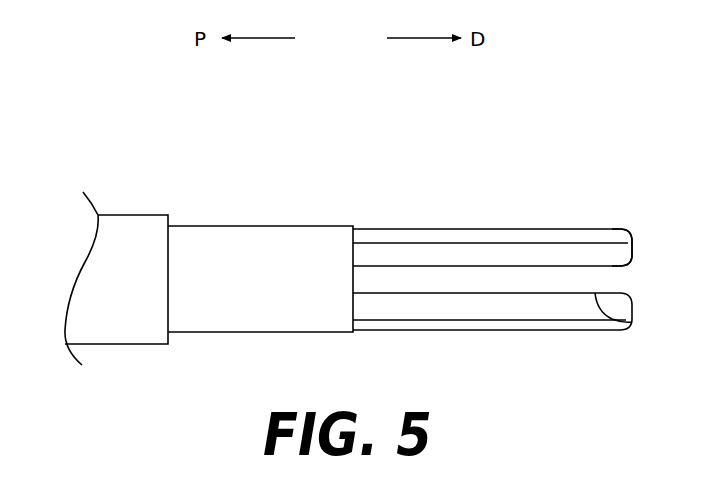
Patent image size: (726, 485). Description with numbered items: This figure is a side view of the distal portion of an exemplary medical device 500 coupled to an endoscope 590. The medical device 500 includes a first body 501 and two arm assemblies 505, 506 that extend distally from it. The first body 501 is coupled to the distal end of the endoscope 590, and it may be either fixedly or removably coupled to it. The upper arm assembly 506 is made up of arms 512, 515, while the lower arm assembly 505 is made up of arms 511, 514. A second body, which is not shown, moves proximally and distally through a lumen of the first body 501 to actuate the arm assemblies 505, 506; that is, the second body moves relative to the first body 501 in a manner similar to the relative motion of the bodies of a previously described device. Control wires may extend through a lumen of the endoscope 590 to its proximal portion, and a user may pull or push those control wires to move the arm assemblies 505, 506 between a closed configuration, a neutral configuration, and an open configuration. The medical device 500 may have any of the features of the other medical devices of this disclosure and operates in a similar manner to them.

The medical device 500 is at (431, 124).
The endoscope 590 is at (123, 227).
The first body 501 is at (235, 236).
The arm 512 is at (552, 233).
The arm 515 is at (488, 246).
The arm assembly 506 is at (614, 214).
The arm assembly 505 is at (583, 338).
The arm 511 is at (552, 328).
The arm 514 is at (612, 313).